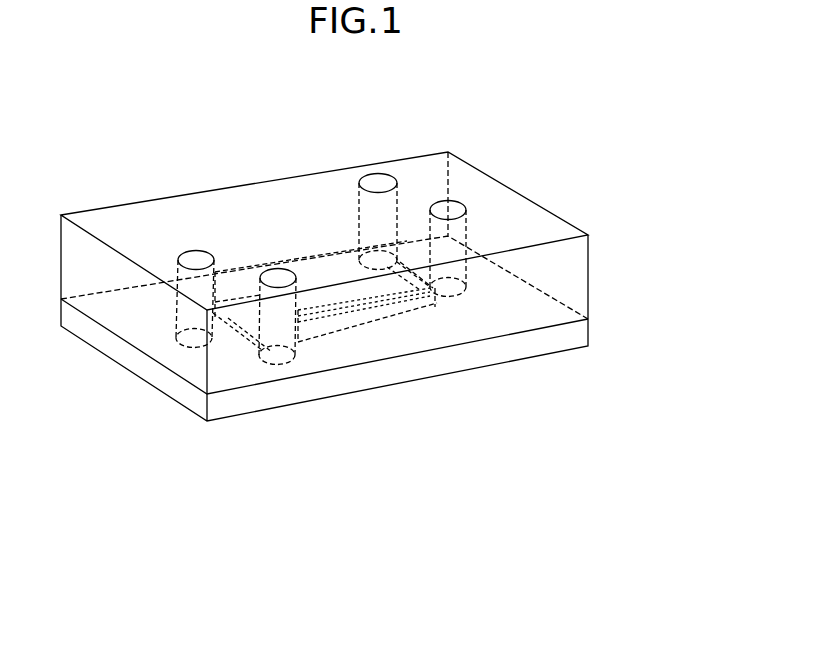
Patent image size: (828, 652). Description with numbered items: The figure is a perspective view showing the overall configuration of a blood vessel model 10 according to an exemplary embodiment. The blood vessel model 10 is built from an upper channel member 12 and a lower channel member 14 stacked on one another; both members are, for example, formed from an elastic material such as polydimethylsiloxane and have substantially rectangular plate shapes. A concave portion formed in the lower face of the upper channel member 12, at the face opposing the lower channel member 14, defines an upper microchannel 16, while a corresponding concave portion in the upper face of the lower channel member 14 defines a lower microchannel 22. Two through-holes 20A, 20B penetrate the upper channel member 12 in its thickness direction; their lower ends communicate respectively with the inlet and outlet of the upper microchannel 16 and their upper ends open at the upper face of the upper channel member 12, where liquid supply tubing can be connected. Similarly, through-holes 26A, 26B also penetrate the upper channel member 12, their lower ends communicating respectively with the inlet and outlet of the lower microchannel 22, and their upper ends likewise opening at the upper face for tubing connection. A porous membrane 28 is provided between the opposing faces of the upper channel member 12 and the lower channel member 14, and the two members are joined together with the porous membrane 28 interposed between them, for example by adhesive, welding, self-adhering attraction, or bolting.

The blood vessel model 10 is at (528, 105).
The upper channel member 12 is at (572, 280).
The lower channel member 14 is at (578, 336).
The upper microchannel 16 is at (238, 334).
The through-hole 20A is at (178, 305).
The through-hole 20B is at (466, 237).
The lower microchannel 22 is at (370, 305).
The through-hole 26A is at (297, 346).
The through-hole 26B is at (392, 208).
The porous membrane 28 is at (325, 298).